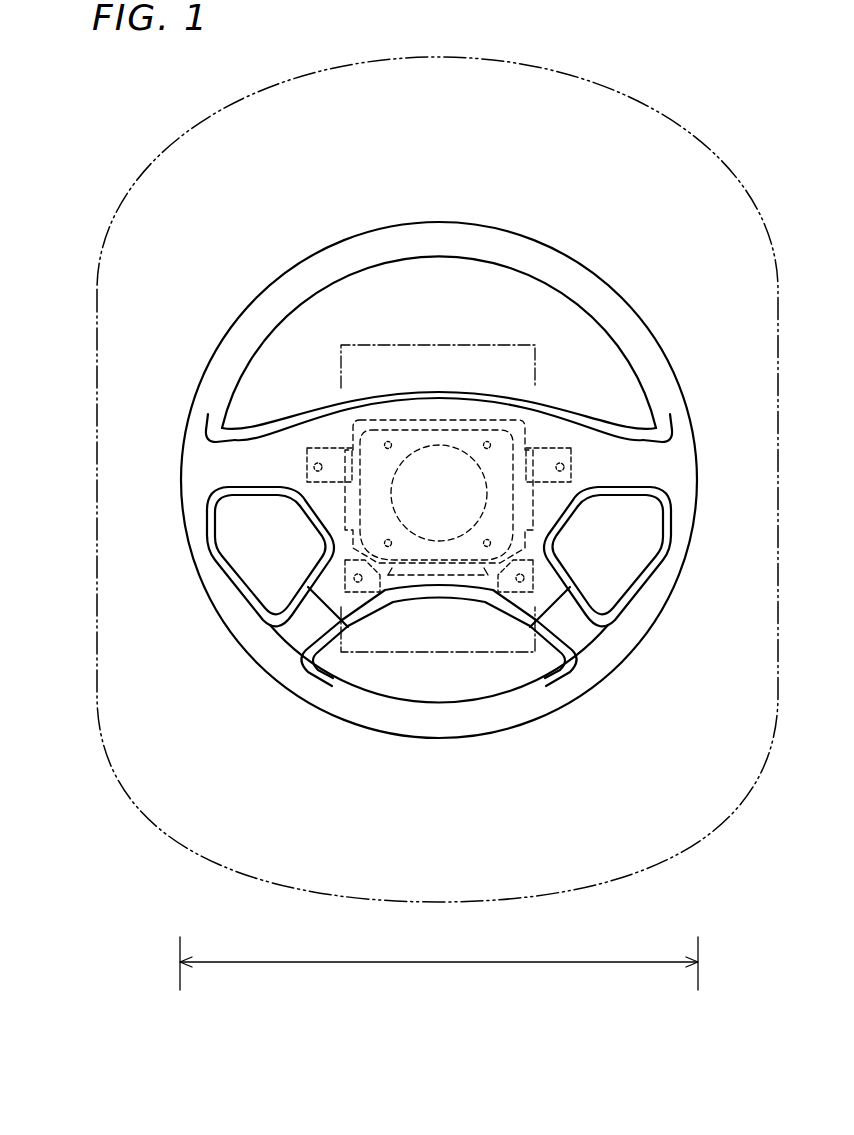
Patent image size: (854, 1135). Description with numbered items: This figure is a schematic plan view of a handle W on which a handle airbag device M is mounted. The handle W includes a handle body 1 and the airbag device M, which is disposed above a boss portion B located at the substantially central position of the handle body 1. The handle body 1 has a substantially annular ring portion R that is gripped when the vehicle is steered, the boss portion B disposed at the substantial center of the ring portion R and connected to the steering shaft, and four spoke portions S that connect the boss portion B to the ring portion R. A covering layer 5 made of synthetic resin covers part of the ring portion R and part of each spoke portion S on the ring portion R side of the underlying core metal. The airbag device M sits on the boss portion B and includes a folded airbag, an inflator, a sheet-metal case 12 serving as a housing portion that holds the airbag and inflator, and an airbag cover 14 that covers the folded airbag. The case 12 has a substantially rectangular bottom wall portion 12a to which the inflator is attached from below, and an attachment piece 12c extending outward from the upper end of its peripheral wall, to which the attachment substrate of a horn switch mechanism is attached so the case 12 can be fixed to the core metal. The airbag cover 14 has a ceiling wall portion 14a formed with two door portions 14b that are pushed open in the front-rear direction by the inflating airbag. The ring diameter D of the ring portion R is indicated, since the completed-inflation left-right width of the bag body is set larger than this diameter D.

The handle body 1 is at (288, 250).
The covering layer 5 is at (586, 291).
The case 12 is at (474, 416).
The bottom wall portion 12a is at (407, 442).
The attachment piece 12c is at (563, 456).
The airbag cover 14 is at (334, 394).
The ceiling wall portion 14a is at (297, 457).
The door portion 14b is at (426, 342).
The airbag device M is at (561, 395).
The spoke portion S is at (242, 478).
The boss portion B is at (452, 628).
The ring portion R is at (528, 710).
The handle W is at (217, 766).
The ring diameter D is at (439, 973).